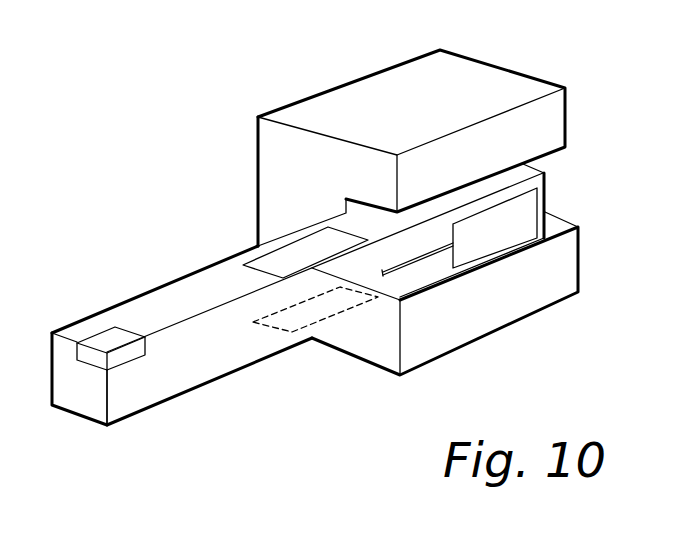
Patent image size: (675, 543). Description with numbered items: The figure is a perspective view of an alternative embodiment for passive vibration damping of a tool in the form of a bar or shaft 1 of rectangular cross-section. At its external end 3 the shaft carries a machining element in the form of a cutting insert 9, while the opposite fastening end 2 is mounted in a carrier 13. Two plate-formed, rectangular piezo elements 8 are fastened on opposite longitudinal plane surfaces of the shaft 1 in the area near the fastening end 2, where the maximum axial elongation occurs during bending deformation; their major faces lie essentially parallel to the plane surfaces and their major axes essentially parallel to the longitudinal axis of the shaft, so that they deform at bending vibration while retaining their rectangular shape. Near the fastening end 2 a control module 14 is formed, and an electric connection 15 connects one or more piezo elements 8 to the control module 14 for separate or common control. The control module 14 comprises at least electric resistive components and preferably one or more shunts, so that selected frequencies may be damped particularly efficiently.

The bar or shaft 1 is at (203, 387).
The fastening end 2 is at (546, 190).
The external end 3 is at (73, 388).
The piezo elements 8 is at (292, 248).
The cutting insert 9 is at (112, 340).
The carrier 13 is at (510, 68).
The control module 14 is at (493, 237).
The electric connection 15 is at (407, 262).